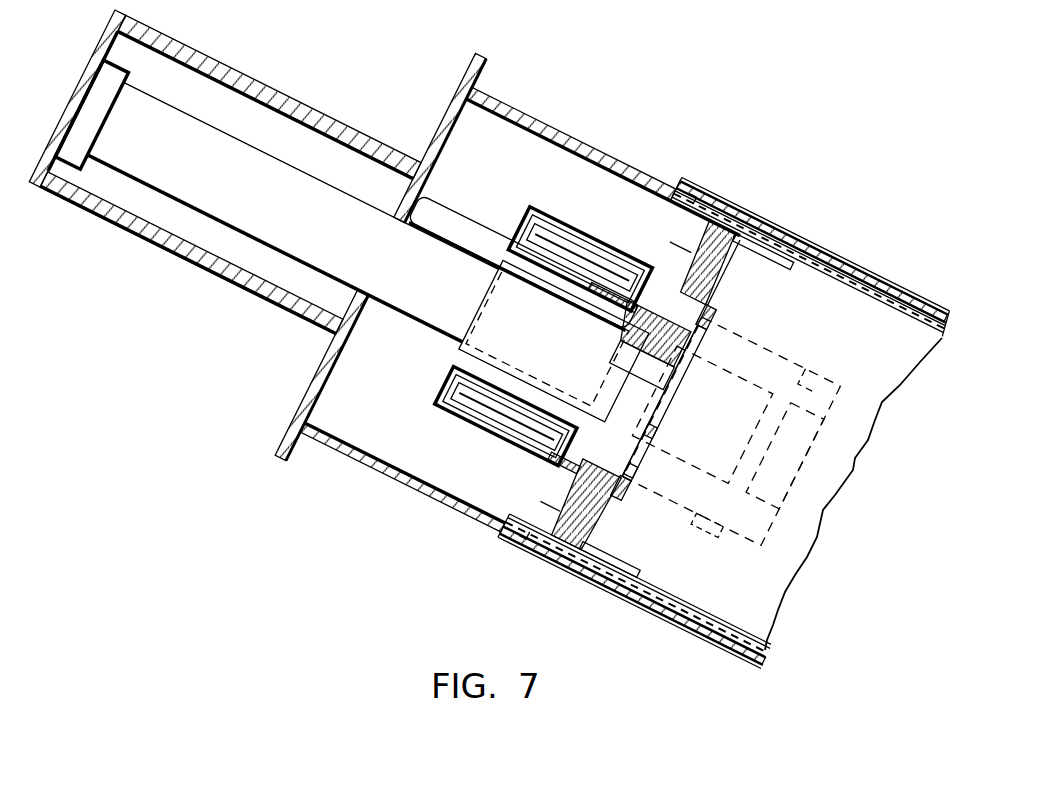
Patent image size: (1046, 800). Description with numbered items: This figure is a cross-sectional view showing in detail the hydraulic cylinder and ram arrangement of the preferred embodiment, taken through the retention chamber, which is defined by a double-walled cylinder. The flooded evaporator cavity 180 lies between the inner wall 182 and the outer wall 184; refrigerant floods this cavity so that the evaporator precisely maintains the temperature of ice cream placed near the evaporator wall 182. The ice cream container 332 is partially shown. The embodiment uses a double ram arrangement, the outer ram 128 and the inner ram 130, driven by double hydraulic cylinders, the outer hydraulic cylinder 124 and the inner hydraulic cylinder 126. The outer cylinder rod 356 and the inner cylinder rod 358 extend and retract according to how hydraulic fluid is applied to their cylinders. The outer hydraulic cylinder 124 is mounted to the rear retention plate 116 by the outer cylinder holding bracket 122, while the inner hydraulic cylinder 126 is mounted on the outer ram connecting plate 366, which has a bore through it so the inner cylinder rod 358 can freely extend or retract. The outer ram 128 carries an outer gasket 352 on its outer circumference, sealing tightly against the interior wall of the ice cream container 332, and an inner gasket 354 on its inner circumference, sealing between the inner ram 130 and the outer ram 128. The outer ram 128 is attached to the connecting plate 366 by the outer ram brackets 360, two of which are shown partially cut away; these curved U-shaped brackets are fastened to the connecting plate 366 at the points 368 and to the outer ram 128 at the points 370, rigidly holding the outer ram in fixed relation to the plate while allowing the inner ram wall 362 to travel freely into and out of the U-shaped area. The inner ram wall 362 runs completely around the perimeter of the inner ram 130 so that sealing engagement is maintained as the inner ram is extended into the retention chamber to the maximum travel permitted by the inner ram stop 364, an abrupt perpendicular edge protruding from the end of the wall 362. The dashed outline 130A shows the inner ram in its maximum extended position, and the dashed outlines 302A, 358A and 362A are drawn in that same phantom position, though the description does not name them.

The rear retention plate 116 is at (462, 100).
The outer cylinder holding bracket 122 is at (245, 72).
The outer hydraulic cylinder 124 is at (217, 162).
The inner hydraulic cylinder 126 is at (457, 224).
The outer ram 128 is at (712, 288).
The inner ram 130 is at (650, 408).
The inner ram maximum extended position 130A is at (820, 490).
The flooded evaporator cavity 180 is at (790, 232).
The inner wall 182 is at (866, 300).
The outer wall 184 is at (857, 262).
The chamber (phantom) 302A is at (742, 333).
The ice cream container 332 is at (900, 365).
The outer gasket 352 is at (740, 240).
The inner gasket 354 is at (706, 320).
The outer cylinder rod 356 is at (655, 434).
The inner cylinder rod 358 is at (676, 380).
The plate (phantom) 358A is at (852, 456).
The outer ram bracket 360 is at (550, 213).
The inner ram wall 362 is at (598, 255).
The seal ring (phantom) 362A is at (702, 520).
The inner ram stop 364 is at (540, 230).
The outer ram connecting plate 366 is at (630, 472).
The bracket-to-connecting-plate attachment points 368 is at (680, 262).
The bracket-to-outer-ram attachment points 370 is at (702, 225).